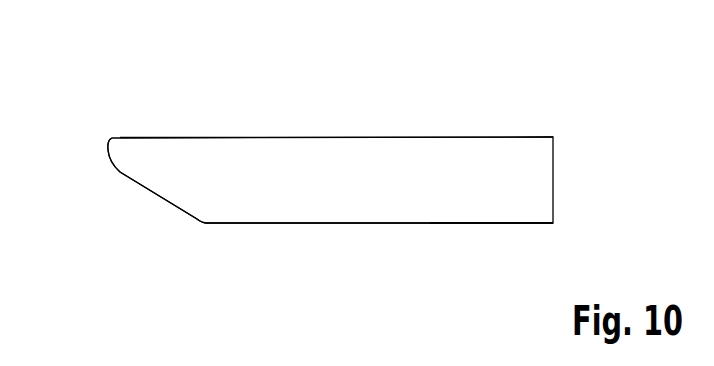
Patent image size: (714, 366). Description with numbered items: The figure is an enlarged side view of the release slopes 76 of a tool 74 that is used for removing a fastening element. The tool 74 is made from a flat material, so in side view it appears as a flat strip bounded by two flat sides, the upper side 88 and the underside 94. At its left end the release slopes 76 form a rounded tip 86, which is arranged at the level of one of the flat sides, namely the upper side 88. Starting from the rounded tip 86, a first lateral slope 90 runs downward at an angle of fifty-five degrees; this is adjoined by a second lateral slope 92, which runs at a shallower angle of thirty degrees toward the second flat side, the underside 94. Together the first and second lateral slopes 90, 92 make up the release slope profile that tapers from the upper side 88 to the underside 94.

The tool 74 is at (445, 112).
The release slopes 76 is at (326, 209).
The rounded tip 86 is at (108, 143).
The upper side 88 is at (252, 137).
The first lateral slope 90 is at (113, 168).
The second lateral slope 92 is at (182, 213).
The underside 94 is at (456, 224).